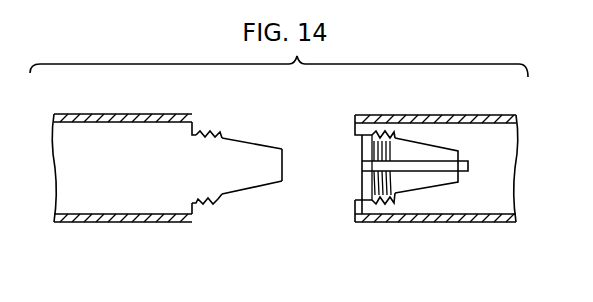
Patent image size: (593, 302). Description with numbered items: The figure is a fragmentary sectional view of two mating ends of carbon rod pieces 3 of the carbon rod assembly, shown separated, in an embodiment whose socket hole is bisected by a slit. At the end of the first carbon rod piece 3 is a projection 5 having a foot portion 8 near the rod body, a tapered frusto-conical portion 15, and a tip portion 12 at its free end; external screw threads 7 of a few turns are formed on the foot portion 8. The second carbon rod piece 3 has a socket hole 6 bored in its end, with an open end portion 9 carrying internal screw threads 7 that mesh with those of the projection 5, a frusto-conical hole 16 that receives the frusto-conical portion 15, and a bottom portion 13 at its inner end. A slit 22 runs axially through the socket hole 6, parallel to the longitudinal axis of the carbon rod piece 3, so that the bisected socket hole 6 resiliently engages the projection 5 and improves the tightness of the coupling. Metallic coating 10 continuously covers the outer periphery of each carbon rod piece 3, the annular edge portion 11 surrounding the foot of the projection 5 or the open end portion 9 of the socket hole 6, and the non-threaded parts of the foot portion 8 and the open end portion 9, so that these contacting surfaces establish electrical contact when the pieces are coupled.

The carbon rod piece 3 is at (124, 130).
The projection 5 is at (252, 153).
The socket hole 6 is at (404, 150).
The screw threads 7 is at (212, 132).
The foot portion 8 is at (200, 208).
The open end portion 9 is at (363, 200).
The metallic coating 10 is at (163, 223).
The annular edge portion 11 is at (201, 130).
The tip portion 12 is at (285, 168).
The bottom portion 13 is at (458, 150).
The frusto-conical portion 15 is at (242, 195).
The frusto-conical hole 16 is at (401, 185).
The slit 22 is at (437, 163).